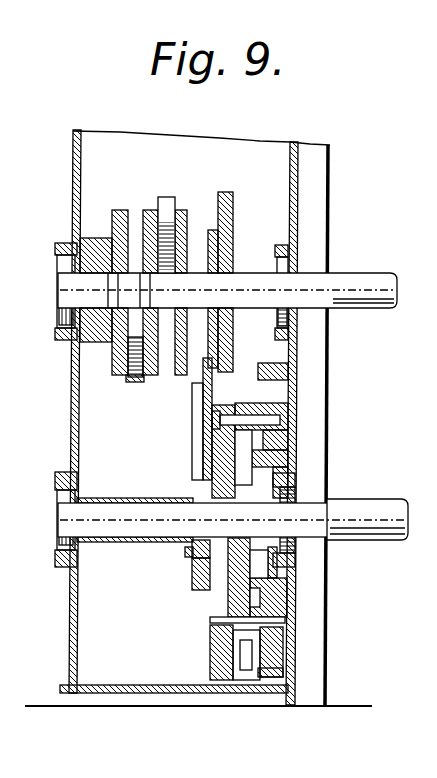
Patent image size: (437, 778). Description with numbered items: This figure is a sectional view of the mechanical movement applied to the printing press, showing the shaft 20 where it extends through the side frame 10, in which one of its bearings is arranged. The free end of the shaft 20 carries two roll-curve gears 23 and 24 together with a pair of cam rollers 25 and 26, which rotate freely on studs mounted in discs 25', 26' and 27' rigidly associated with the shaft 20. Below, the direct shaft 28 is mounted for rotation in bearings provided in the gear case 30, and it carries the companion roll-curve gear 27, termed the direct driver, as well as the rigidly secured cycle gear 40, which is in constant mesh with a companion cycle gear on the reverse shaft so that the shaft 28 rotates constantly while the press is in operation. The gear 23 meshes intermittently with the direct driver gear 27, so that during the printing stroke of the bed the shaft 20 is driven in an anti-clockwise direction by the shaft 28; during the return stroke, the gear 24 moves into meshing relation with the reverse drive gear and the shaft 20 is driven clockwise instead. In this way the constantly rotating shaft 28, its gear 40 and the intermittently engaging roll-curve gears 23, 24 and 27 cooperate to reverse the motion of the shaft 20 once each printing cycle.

The side frame 10 is at (315, 423).
The shaft 20 is at (362, 283).
The roll-curve gear 23 is at (234, 208).
The roll-curve gear 24 is at (79, 241).
The cam roller 25 is at (175, 212).
The disc 25' is at (177, 309).
The cam roller 26 is at (136, 377).
The disc 26' is at (147, 323).
The roll-curve gear 27 is at (265, 651).
The disc 27' is at (105, 309).
The direct shaft 28 is at (125, 530).
The gear case 30 is at (295, 592).
The gear 40 is at (270, 388).